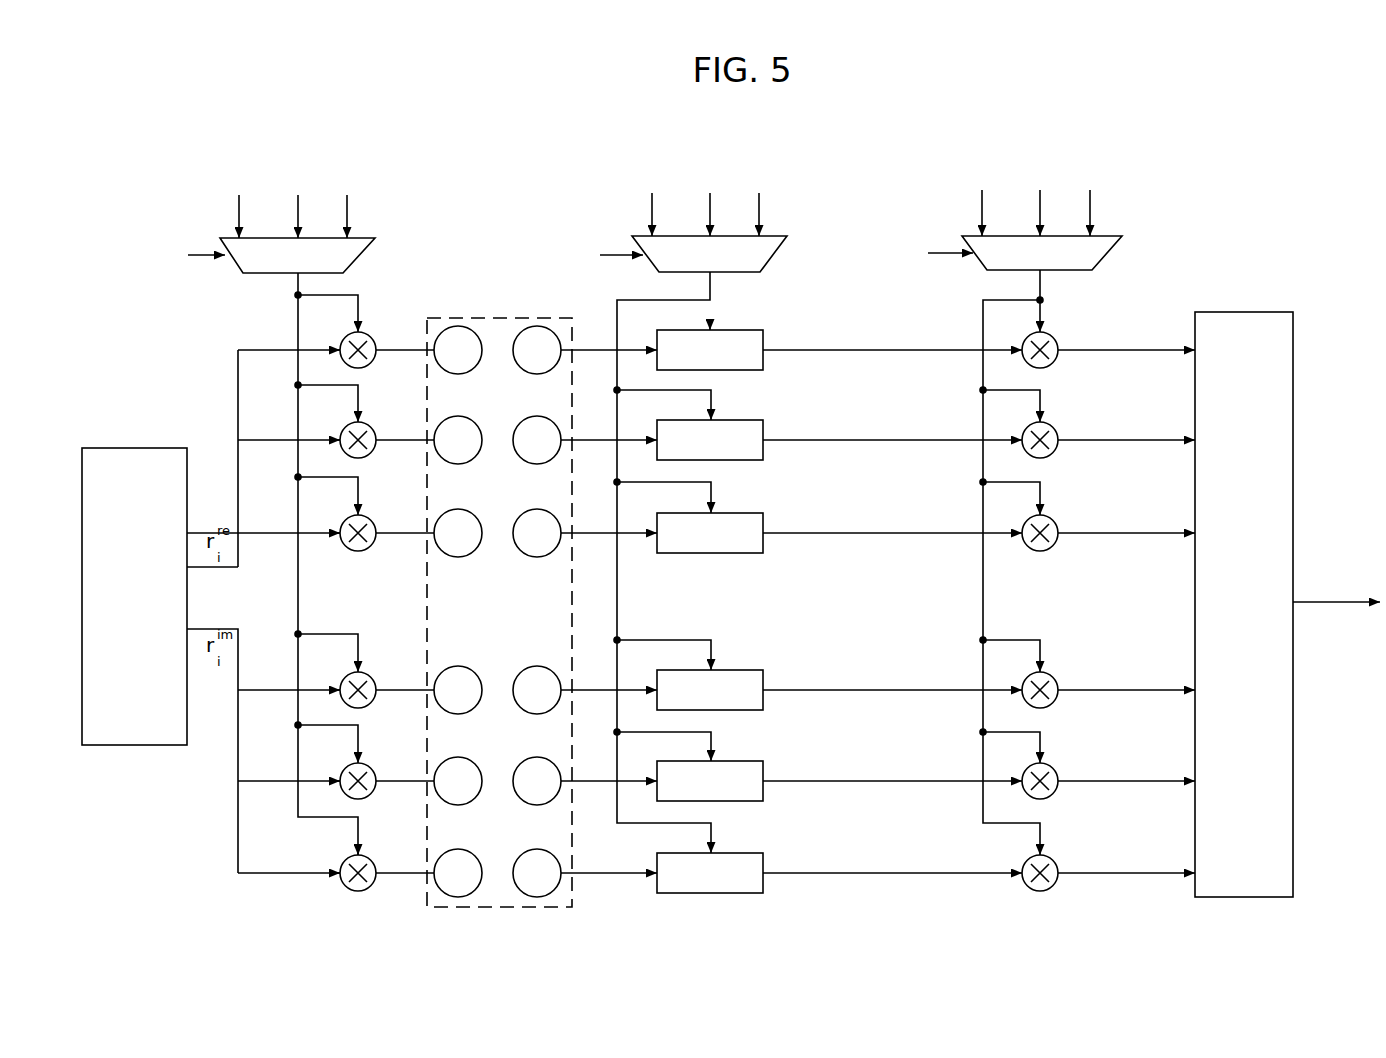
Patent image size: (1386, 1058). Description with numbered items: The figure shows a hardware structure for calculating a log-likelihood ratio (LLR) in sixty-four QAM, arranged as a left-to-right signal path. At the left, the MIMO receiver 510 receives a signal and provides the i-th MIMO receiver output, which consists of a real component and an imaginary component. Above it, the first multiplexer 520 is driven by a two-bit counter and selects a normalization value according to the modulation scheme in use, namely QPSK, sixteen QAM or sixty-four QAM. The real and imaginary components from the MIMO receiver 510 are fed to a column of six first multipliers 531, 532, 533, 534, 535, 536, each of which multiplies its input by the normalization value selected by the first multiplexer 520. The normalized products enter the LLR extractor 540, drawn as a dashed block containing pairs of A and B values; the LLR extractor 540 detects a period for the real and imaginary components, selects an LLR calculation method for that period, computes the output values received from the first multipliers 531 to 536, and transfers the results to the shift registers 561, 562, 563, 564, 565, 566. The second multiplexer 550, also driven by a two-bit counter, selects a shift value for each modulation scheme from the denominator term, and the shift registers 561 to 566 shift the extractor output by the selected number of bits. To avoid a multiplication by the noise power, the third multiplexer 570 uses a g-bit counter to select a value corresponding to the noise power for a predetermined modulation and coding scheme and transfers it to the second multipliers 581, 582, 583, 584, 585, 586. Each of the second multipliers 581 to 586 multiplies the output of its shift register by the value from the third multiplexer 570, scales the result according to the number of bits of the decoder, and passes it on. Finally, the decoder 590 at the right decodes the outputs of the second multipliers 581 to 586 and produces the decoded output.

The MIMO receiver 510 is at (138, 448).
The first multiplexer 520 is at (365, 238).
The first multiplier 531 is at (371, 339).
The first multiplier 532 is at (371, 429).
The first multiplier 533 is at (371, 522).
The first multiplier 534 is at (371, 679).
The first multiplier 535 is at (371, 770).
The first multiplier 536 is at (371, 862).
The LLR extractor 540 is at (540, 318).
The second multiplexer 550 is at (777, 236).
The shift register 561 is at (733, 330).
The shift register 562 is at (733, 420).
The shift register 563 is at (733, 513).
The shift register 564 is at (733, 670).
The shift register 565 is at (733, 761).
The shift register 566 is at (733, 853).
The third multiplexer 570 is at (1107, 236).
The second multiplier 581 is at (1054, 339).
The second multiplier 582 is at (1054, 429).
The second multiplier 583 is at (1054, 522).
The second multiplier 584 is at (1054, 679).
The second multiplier 585 is at (1054, 770).
The second multiplier 586 is at (1054, 862).
The decoder 590 is at (1250, 312).